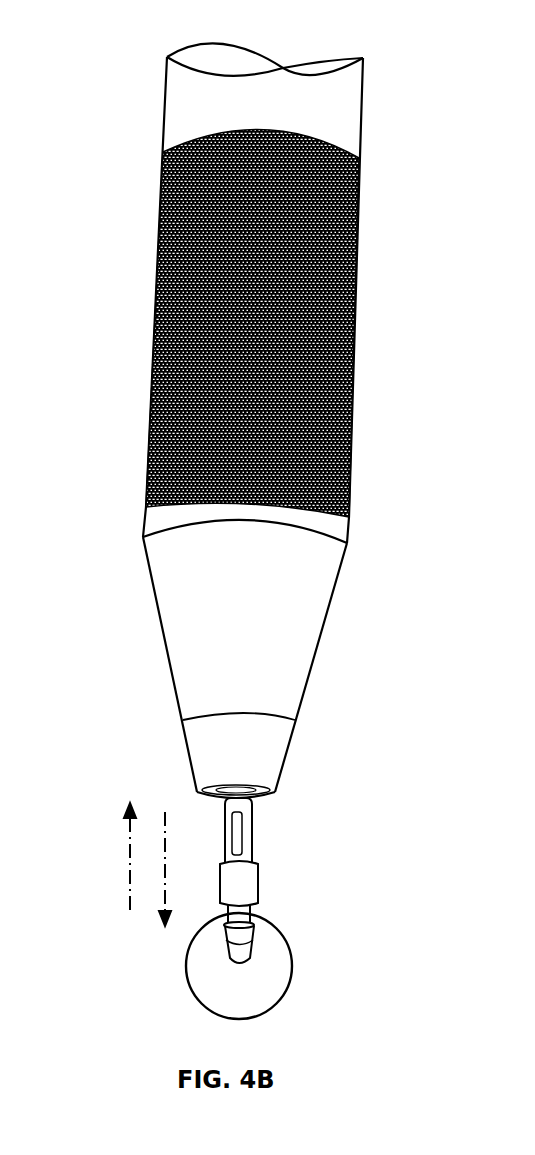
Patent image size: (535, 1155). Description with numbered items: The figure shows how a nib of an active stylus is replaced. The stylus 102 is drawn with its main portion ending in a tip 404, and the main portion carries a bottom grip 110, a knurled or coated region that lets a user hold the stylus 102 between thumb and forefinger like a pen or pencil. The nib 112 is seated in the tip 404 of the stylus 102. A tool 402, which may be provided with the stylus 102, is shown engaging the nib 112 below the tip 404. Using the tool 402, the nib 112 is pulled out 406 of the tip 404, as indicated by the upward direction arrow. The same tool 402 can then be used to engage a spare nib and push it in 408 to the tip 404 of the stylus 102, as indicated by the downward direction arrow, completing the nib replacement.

The stylus 102 is at (283, 70).
The bottom grip 110 is at (350, 317).
The tip 404 is at (320, 645).
The nib 112 is at (260, 882).
The tool 402 is at (287, 983).
The out direction 406 is at (128, 863).
The in direction 408 is at (165, 812).